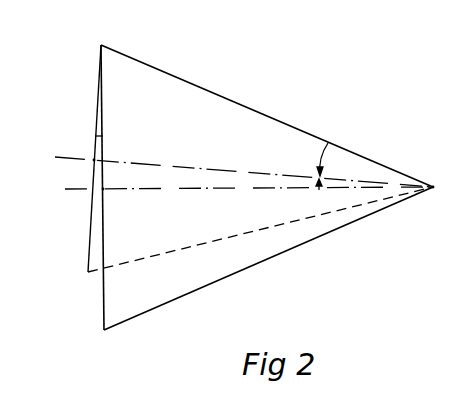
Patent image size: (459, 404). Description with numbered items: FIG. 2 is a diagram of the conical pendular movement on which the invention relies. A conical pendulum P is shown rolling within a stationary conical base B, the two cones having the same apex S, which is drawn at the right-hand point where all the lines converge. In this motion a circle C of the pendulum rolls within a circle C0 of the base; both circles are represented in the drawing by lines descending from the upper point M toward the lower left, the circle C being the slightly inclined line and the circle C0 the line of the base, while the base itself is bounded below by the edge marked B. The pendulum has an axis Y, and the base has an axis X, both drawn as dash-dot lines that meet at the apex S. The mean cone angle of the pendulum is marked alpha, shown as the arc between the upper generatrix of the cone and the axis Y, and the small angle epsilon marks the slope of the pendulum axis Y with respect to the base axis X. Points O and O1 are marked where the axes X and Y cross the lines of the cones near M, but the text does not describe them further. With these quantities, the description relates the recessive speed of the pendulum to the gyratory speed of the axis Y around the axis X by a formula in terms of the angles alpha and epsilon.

The vertex M of the sector M is at (254, 107).
The apex S is at (439, 173).
The stationary conical base B is at (213, 283).
The circle of the base C0 is at (103, 306).
The circle of the pendulum C is at (88, 243).
The conical pendulum P is at (83, 270).
The axis of the pendulum Y is at (236, 166).
The axis of the base X is at (236, 192).
The origin O is at (103, 189).
The point O prime O1 is at (93, 160).
The mean cone angle of the pendulum alpha is at (314, 159).
The slope of the pendulum axis epsilon is at (208, 169).